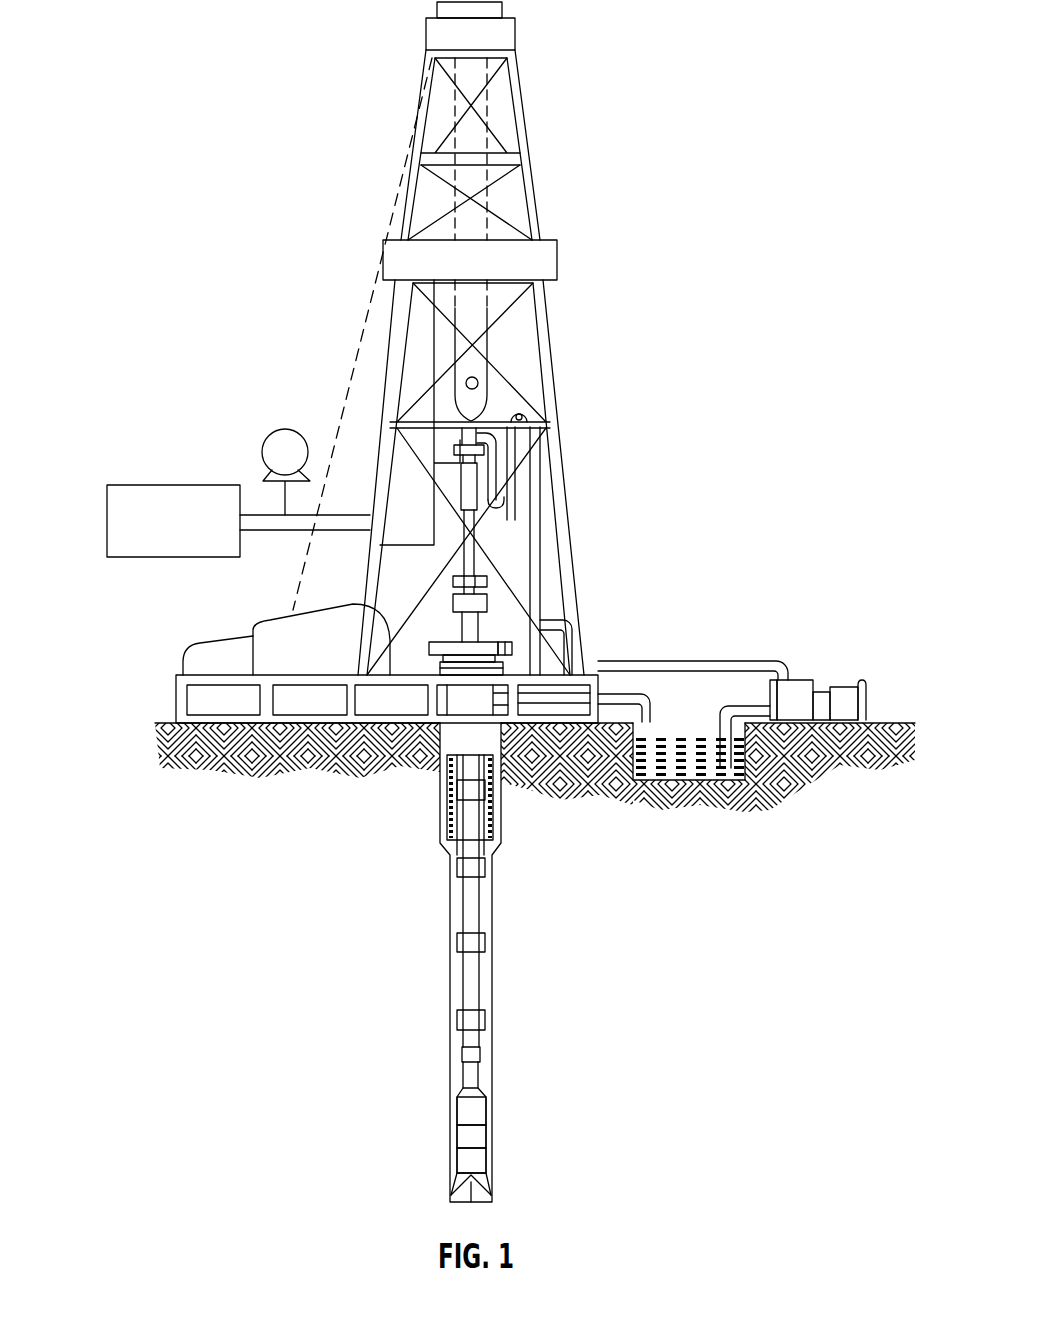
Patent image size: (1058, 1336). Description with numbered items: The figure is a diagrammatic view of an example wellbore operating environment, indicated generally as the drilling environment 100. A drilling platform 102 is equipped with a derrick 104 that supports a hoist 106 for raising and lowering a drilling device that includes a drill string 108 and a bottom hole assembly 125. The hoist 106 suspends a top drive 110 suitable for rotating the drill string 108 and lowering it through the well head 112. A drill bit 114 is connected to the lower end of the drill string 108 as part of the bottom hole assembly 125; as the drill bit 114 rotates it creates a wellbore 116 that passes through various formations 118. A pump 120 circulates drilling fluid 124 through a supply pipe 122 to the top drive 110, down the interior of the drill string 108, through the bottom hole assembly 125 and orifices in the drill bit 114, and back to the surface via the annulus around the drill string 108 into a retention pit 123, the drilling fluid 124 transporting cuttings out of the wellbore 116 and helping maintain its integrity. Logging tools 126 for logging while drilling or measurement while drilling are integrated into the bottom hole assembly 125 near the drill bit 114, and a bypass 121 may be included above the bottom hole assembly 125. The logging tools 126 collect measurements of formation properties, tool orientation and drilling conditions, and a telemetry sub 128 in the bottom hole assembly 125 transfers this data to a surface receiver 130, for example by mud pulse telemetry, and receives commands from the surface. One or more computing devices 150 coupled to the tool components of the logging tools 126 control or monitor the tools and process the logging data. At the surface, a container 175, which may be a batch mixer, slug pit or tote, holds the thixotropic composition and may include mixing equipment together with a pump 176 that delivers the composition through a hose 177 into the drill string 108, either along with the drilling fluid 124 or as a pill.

The drilling system 100 is at (340, 30).
The drilling platform 102 is at (173, 700).
The derrick 104 is at (538, 188).
The hoist 106 is at (490, 390).
The drill string 108 is at (480, 908).
The top drive 110 is at (492, 500).
The well head 112 is at (497, 638).
The drill bit 114 is at (488, 1187).
The wellbore 116 is at (493, 942).
The formations 118 is at (603, 965).
The pump 120 is at (795, 680).
The bypass 121 is at (462, 1055).
The supply pipe 122 is at (683, 660).
The retention pit 123 is at (733, 782).
The drilling fluid 124 is at (665, 782).
The bottom hole assembly 125 is at (372, 1078).
The logging tools 126 is at (457, 1135).
The telemetry sub 128 is at (457, 1110).
The surface receiver 130 is at (478, 547).
The computing device 150 is at (465, 1142).
The container 175 is at (150, 485).
The pump 176 is at (270, 433).
The hose 177 is at (355, 510).